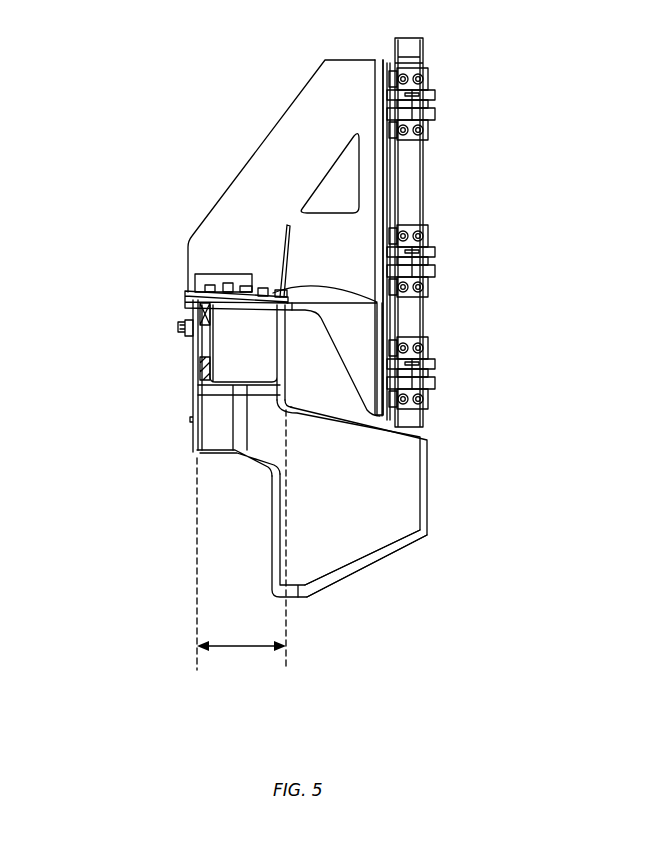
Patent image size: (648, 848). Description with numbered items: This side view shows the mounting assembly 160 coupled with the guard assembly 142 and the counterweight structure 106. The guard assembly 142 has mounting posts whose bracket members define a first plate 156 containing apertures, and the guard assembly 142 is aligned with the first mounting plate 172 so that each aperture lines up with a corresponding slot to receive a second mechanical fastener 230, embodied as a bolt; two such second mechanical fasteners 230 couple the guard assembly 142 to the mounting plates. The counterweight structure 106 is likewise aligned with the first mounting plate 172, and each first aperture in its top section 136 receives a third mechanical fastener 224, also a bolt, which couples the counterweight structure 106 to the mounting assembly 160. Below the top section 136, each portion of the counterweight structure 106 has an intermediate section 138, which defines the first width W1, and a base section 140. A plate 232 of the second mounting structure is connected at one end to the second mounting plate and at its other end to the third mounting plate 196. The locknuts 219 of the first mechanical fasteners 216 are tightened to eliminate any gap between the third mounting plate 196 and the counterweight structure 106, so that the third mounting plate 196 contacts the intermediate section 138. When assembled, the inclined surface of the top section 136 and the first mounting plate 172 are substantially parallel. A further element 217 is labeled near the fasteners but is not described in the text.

The guard assembly 142 is at (493, 62).
The first mounting plate 172 is at (252, 290).
The second mechanical fastener 230 is at (203, 273).
The first plate 156 is at (188, 258).
The plate 232 is at (185, 297).
The engagement surface 217 is at (176, 332).
The locknut 219 is at (178, 330).
The first mechanical fastener 216 is at (186, 355).
The mounting assembly 160 is at (215, 388).
The top section 136 is at (197, 390).
The third mounting plate 196 is at (195, 413).
The intermediate section 138 is at (208, 437).
The third mechanical fastener 224 is at (393, 303).
The counterweight structure 106 is at (444, 483).
The base section 140 is at (343, 517).
The first width W1 is at (241, 540).